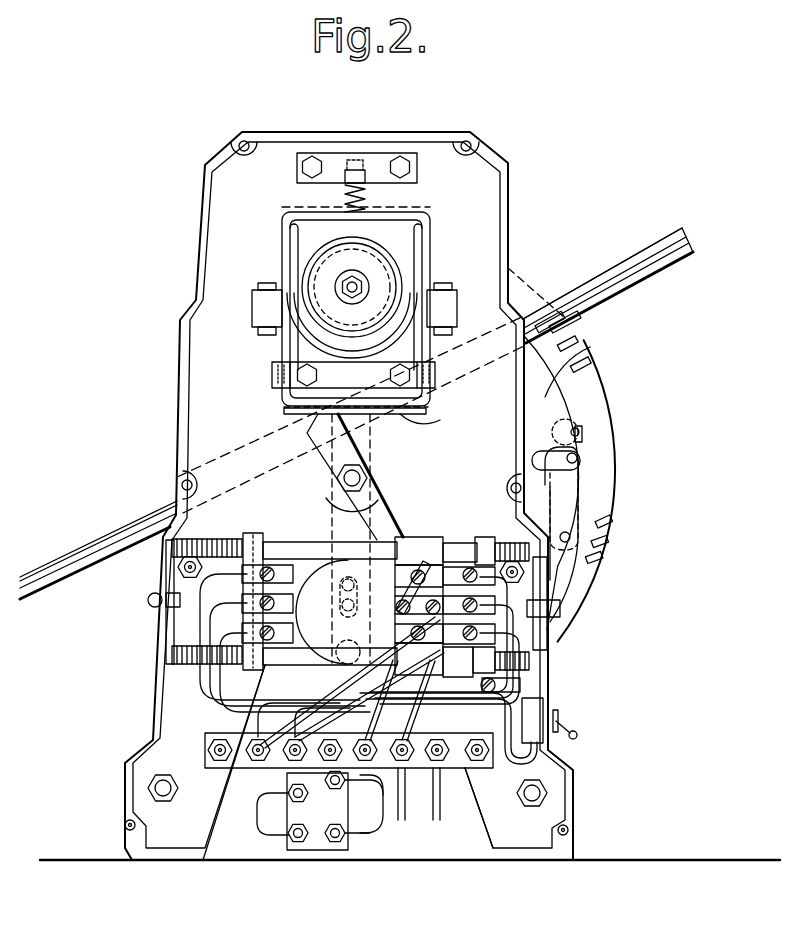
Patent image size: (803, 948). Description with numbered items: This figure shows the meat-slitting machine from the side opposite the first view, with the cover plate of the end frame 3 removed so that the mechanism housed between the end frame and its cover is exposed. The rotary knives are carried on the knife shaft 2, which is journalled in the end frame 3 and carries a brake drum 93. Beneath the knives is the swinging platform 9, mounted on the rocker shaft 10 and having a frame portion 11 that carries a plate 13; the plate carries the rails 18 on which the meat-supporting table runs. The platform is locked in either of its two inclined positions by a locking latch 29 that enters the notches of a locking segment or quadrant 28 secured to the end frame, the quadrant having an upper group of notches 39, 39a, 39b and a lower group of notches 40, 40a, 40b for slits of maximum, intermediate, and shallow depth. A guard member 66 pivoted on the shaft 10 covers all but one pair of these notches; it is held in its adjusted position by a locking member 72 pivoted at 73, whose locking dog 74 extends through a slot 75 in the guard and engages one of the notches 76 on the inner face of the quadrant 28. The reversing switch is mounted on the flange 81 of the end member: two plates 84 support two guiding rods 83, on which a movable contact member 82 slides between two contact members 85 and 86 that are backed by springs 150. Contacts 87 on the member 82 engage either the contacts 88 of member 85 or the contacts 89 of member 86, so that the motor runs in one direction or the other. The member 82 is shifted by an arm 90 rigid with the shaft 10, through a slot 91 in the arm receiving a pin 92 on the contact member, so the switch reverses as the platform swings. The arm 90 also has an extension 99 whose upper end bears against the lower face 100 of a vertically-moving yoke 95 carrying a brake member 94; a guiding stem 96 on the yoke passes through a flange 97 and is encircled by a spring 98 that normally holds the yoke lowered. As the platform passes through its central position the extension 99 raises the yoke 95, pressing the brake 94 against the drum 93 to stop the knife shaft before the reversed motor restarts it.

The shaft 2 is at (351, 284).
The end frame 3 is at (215, 372).
The swinging platform 9 is at (683, 230).
The rocker shaft 10 is at (358, 470).
The frame portion 11 is at (667, 262).
The plate 13 is at (635, 267).
The rails 18 is at (122, 507).
The locking segment 28 is at (597, 402).
The locking latch 29 is at (566, 312).
The notch 39 is at (578, 321).
The notch 39a is at (576, 339).
The notch 39b is at (588, 357).
The notch 40 is at (600, 558).
The notch 40a is at (607, 541).
The notch 40b is at (609, 522).
The guard member 66 is at (560, 390).
The locking member 72 is at (560, 466).
The pivot 73 is at (593, 577).
The locking dog 74 is at (578, 457).
The slot 75 is at (545, 397).
The notches 76 is at (580, 439).
The flange 81 is at (510, 212).
The movable contact member 82 is at (428, 563).
The guiding rods 83 is at (320, 547).
The plates 84 is at (168, 578).
The contact member 85 is at (460, 570).
The contact member 86 is at (276, 585).
The contacts 87 is at (398, 619).
The cooperating contacts 88 is at (452, 664).
The cooperating contacts 89 is at (282, 657).
The arm 90 is at (332, 512).
The slot 91 is at (410, 560).
The pin 92 is at (350, 660).
The brake drum 93 is at (318, 327).
The brake member 94 is at (352, 347).
The yoke 95 is at (432, 260).
The guiding stem 96 is at (352, 170).
The flange 97 is at (403, 197).
The spring 98 is at (343, 200).
The extension 99 is at (312, 453).
The lower face 100 is at (420, 417).
The springs 150 is at (210, 540).